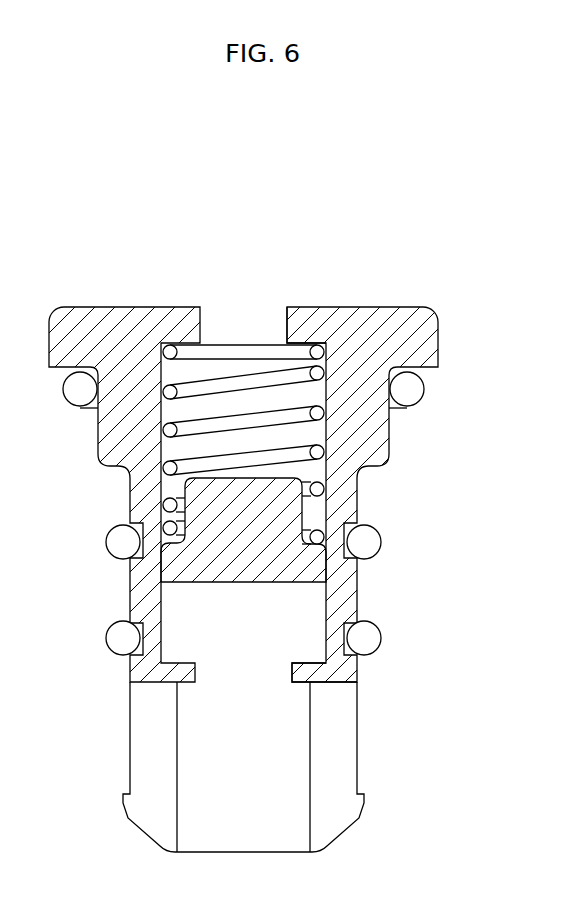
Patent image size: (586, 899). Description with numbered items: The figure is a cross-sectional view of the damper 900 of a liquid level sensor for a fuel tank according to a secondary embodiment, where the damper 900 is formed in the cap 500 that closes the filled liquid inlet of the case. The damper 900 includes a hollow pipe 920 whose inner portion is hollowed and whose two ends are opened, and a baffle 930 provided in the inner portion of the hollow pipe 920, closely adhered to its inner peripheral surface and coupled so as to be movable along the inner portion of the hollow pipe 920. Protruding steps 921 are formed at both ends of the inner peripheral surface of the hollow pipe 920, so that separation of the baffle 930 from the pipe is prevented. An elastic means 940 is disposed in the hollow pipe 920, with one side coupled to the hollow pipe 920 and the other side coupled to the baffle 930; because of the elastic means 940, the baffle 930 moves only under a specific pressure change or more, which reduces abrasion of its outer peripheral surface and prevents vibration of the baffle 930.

The cap 500 is at (158, 236).
The damper 900 is at (270, 523).
The hollow pipe 920 is at (347, 437).
The steps 921 is at (308, 317).
The baffle 930 is at (262, 532).
The elastic means 940 is at (223, 355).